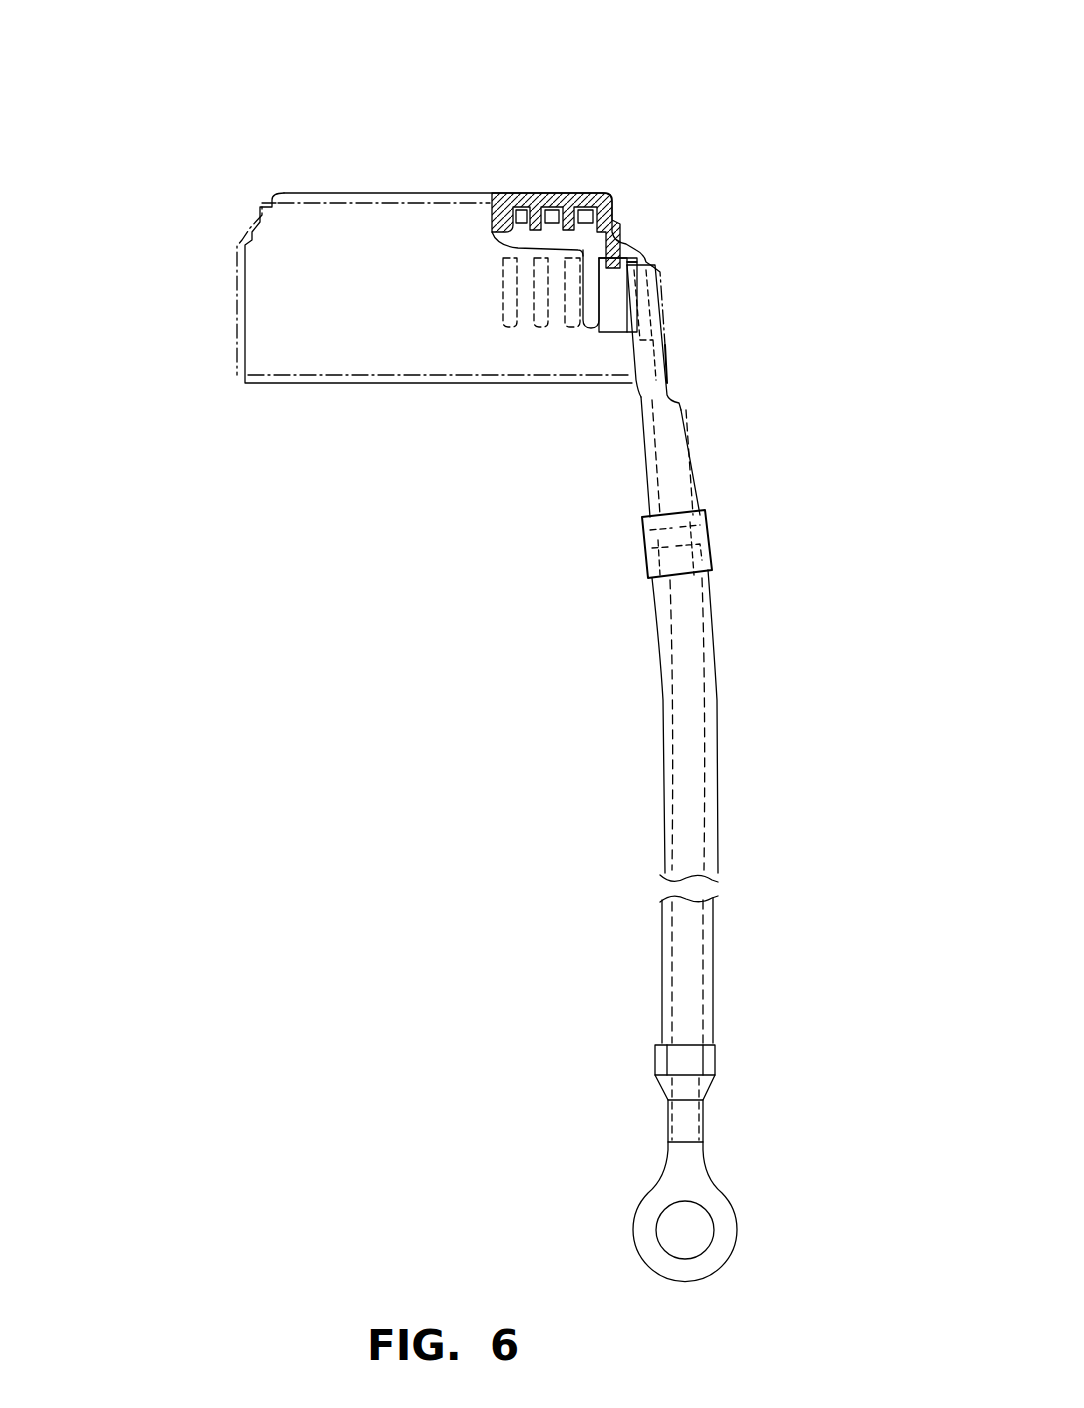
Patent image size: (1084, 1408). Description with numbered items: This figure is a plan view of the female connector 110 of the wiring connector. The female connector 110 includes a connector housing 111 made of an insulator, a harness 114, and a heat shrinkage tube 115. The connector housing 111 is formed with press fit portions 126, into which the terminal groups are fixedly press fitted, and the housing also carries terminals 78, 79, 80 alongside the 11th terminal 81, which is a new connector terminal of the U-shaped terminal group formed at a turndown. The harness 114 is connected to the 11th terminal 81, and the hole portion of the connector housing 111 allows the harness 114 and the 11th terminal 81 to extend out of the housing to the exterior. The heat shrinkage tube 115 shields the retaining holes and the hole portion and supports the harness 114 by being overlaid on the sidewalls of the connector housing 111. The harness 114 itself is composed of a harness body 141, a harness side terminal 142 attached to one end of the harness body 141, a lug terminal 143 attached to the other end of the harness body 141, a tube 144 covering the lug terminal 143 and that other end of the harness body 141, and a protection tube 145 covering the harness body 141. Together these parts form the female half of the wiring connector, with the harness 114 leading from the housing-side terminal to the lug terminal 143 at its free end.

The female connector 110 is at (218, 88).
The connector housing 111 is at (372, 190).
The heat shrinkage tube 115 is at (235, 322).
The press fit portions 126 is at (520, 228).
The first pin terminal 78 is at (508, 335).
The second pin terminal 79 is at (548, 335).
The third pin terminal 80 is at (591, 340).
The 11th terminal 81 is at (663, 299).
The harness side terminal 142 is at (655, 289).
The harness body 141 is at (687, 448).
The harness 114 is at (727, 647).
The protection tube 145 is at (718, 732).
The tube 144 is at (716, 1057).
The lug terminal 143 is at (715, 1197).